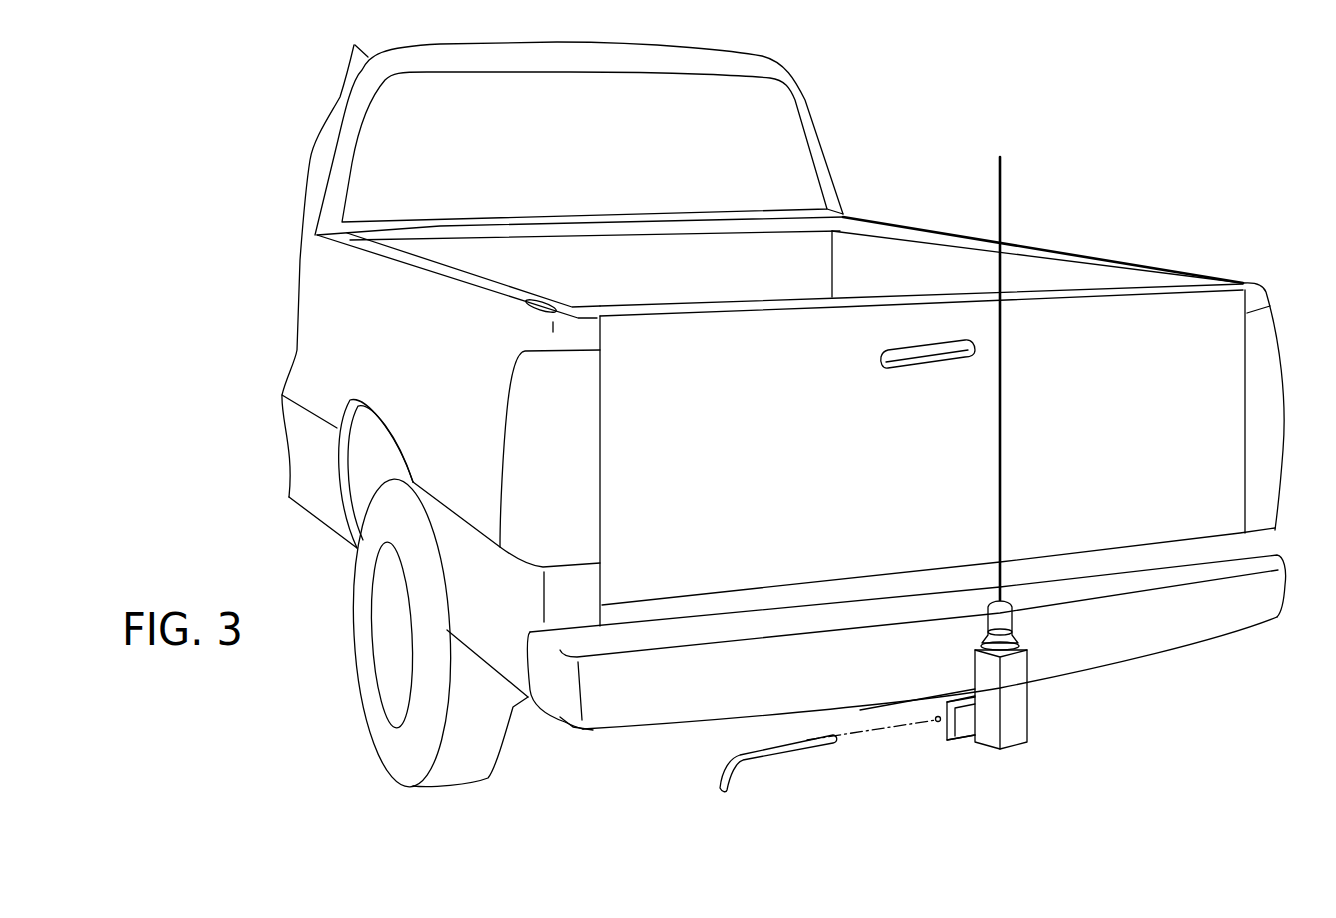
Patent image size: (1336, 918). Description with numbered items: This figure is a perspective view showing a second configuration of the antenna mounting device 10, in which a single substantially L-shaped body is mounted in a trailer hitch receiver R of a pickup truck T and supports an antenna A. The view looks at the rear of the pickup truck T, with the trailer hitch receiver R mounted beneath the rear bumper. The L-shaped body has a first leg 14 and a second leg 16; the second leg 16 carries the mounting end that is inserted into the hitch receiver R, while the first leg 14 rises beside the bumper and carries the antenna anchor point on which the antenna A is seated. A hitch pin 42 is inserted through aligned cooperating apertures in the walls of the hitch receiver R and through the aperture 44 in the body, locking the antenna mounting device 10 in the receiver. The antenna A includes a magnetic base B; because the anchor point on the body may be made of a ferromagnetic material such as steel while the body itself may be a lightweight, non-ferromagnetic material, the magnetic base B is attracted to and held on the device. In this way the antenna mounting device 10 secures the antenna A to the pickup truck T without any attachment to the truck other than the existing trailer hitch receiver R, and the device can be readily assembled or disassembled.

The antenna mounting device 10 is at (1059, 498).
The first leg 14 is at (1015, 688).
The second leg 16 is at (963, 723).
The hitch pin 42 is at (730, 772).
The aperture 44 is at (937, 721).
The antenna A is at (1002, 468).
The magnetic base B is at (1020, 640).
The trailer hitch receiver R is at (923, 720).
The pickup truck T is at (747, 436).